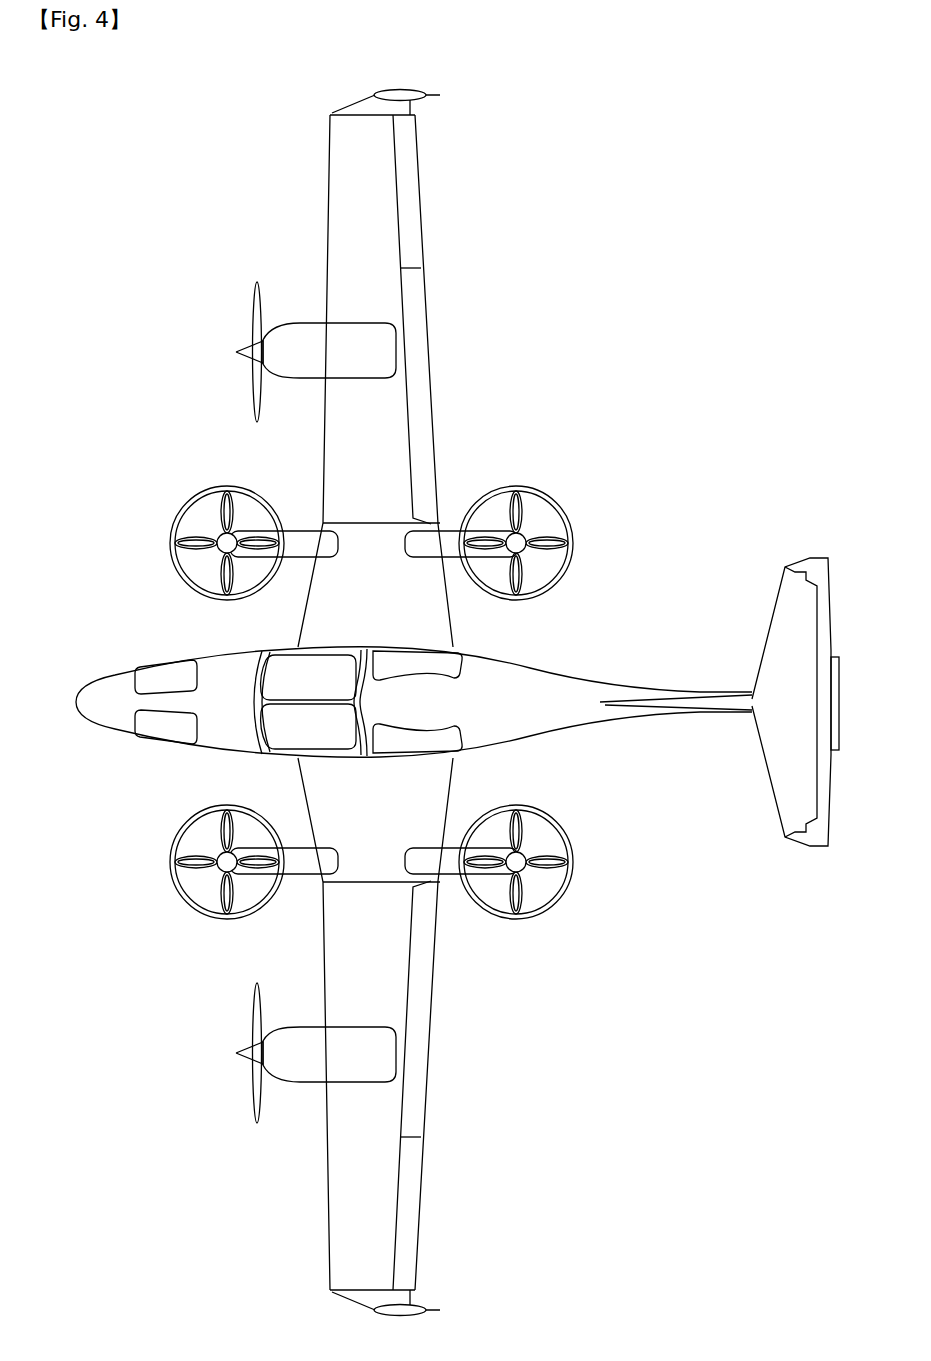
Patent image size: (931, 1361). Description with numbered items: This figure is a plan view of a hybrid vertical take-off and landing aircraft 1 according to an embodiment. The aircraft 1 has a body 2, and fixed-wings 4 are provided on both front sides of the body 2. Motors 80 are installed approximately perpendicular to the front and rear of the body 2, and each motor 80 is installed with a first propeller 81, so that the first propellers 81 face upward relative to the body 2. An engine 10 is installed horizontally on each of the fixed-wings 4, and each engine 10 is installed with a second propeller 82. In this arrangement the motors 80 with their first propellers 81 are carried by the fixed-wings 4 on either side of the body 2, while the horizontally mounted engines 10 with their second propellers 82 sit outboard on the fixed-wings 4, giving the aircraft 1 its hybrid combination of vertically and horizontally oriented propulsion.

The aircraft 1 is at (78, 626).
The body 2 is at (118, 715).
The fixed-wing 4 is at (382, 950).
The engine 10 is at (307, 338).
The motor 80 is at (297, 535).
The first propeller 81 is at (215, 505).
The second propeller 82 is at (256, 308).